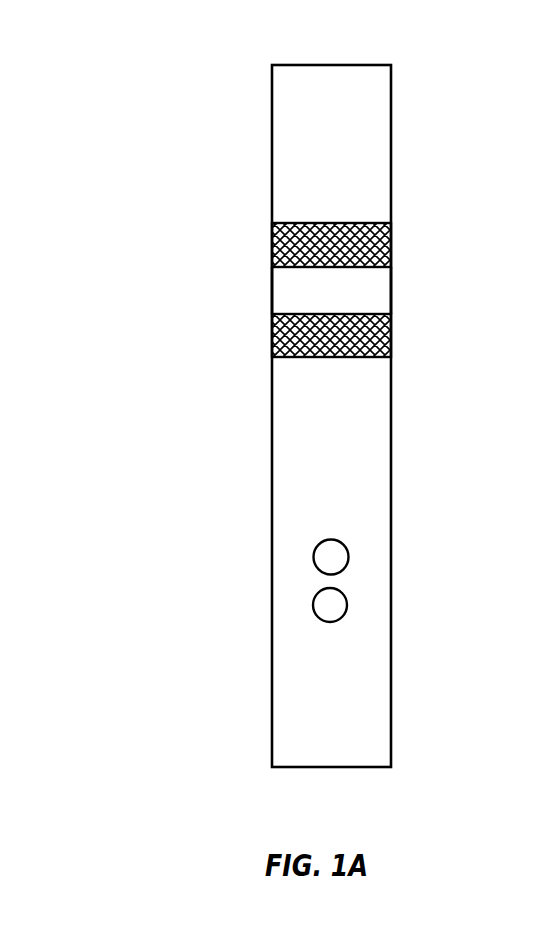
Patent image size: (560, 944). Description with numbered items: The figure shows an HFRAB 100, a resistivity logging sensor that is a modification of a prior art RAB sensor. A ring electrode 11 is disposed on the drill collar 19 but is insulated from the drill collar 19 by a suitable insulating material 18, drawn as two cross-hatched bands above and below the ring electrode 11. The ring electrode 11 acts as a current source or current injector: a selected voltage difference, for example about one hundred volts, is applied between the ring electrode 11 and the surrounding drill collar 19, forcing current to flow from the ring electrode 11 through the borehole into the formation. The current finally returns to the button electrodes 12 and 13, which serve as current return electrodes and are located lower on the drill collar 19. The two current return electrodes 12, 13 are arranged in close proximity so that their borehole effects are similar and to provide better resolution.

The HFRAB 100 is at (157, 110).
The drill collar 19 is at (338, 161).
The insulating material 18 is at (275, 252).
The ring electrode 11 is at (377, 290).
The button electrode 12 is at (345, 543).
The button electrode 13 is at (347, 601).